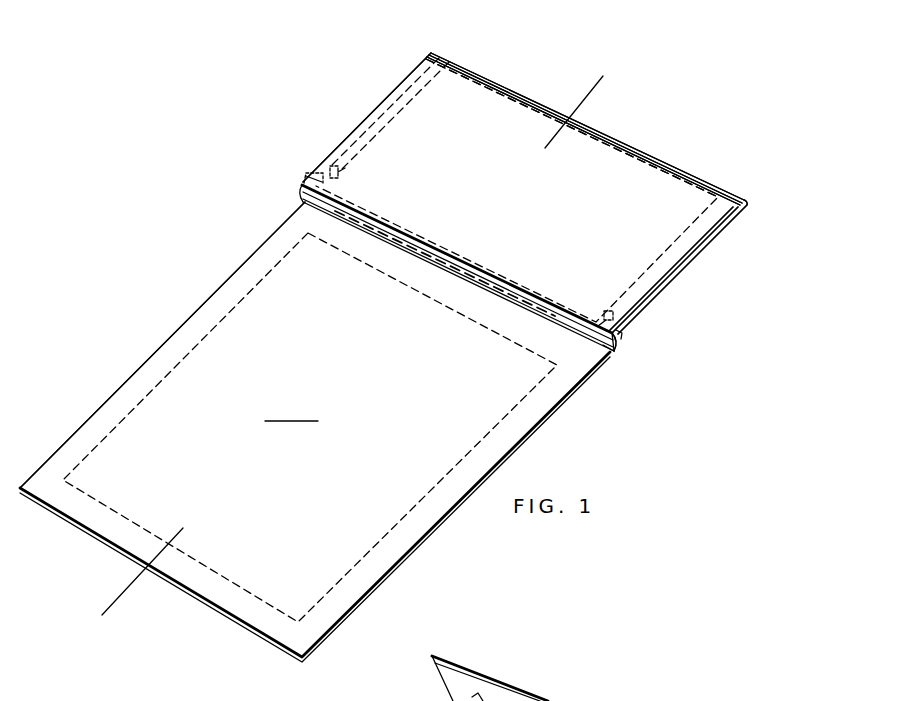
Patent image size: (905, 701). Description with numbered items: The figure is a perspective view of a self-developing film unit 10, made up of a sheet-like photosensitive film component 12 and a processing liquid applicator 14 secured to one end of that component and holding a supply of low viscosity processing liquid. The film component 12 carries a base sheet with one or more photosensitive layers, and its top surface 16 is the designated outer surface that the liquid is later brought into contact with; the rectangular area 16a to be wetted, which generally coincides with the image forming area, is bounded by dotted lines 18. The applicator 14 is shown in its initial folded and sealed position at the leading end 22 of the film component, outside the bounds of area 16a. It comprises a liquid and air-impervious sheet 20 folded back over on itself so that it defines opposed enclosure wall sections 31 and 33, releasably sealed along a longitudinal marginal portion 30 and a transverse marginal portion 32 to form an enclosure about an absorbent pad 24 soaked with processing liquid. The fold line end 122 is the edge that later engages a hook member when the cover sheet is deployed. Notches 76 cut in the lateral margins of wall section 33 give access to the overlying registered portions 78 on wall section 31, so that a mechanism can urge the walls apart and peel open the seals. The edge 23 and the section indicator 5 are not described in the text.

The self-developing film unit 10 is at (708, 402).
The photosensitive film component 12 is at (545, 417).
The processing liquid applicator 14 is at (755, 200).
The top surface 16 is at (162, 355).
The rectangular area 16a is at (291, 410).
The dotted lines 18 is at (255, 288).
The liquid and air-impervious sheet 20 is at (737, 216).
The leading end 22 is at (608, 354).
The cover panel side edge 23 is at (394, 93).
The absorbent pad 24 is at (507, 120).
The longitudinally extending marginal portion 30 is at (718, 219).
The enclosure wall section 31 is at (480, 98).
The transverse marginal portion 32 is at (437, 249).
The enclosure wall section 33 is at (700, 257).
The notches 76 is at (324, 182).
The overlying registered portions 78 is at (320, 176).
The fold line end 122 is at (667, 163).
The section line 5- 5 is at (592, 88).